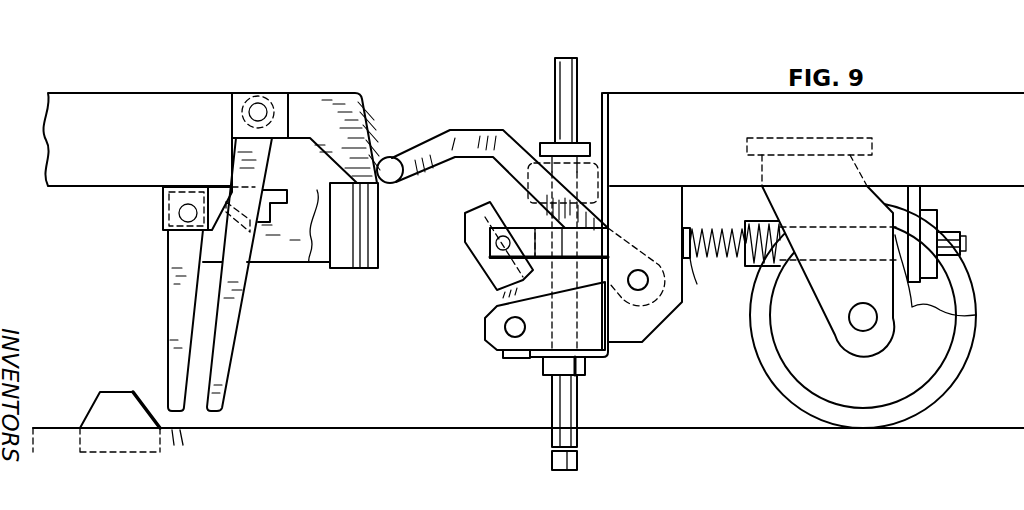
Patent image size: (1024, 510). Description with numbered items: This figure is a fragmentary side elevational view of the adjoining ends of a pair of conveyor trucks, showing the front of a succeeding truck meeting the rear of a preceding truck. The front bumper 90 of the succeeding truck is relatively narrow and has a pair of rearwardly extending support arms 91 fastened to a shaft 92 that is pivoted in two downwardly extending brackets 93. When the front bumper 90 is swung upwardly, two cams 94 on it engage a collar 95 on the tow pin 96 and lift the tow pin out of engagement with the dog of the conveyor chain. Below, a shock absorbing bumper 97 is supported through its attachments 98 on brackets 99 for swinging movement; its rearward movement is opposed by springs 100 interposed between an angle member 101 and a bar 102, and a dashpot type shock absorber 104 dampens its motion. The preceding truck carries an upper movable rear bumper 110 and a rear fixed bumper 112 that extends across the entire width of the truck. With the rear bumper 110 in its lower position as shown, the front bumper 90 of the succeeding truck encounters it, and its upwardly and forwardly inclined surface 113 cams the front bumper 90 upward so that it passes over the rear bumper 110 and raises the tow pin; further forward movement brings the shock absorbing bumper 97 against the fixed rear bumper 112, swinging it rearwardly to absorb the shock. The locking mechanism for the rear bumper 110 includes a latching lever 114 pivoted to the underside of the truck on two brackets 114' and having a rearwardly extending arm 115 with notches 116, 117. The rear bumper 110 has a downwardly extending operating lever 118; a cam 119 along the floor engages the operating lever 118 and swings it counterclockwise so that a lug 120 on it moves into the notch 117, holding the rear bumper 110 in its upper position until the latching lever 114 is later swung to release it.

The front bumper 90 is at (391, 158).
The support arms 91 is at (465, 130).
The shaft 92 is at (643, 290).
The brackets 93 is at (672, 312).
The cams 94 is at (537, 152).
The collar 95 is at (588, 143).
The tow pin 96 is at (561, 58).
The shock absorbing bumper 97 is at (478, 260).
The attachments 98 is at (490, 311).
The brackets 99 is at (522, 360).
The springs 100 is at (689, 260).
The angle member 101 is at (605, 357).
The bar 102 is at (921, 198).
The dashpot type shock absorber 104 is at (749, 312).
The rear bumper 110 is at (340, 81).
The fixed rear bumper 112 is at (352, 270).
The inclined surface 113 is at (363, 118).
The latching lever 114 is at (151, 320).
The brackets 114' is at (158, 208).
The arm 115 is at (271, 198).
The notch 116 is at (264, 258).
The notch 117 is at (302, 200).
The operating lever 118 is at (235, 321).
The cam 119 is at (128, 392).
The lug 120 is at (256, 266).